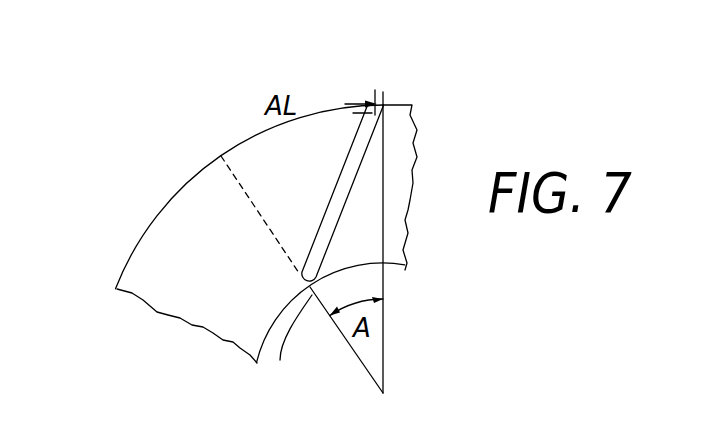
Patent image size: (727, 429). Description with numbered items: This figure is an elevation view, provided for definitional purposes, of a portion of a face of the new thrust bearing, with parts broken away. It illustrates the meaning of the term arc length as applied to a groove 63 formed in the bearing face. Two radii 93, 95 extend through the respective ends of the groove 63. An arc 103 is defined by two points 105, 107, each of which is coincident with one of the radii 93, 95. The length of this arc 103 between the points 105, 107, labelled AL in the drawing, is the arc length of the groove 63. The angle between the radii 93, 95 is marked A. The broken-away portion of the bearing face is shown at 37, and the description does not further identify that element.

The plate 37 is at (125, 268).
The groove 63 is at (325, 213).
The radius 93 is at (280, 360).
The radius 95 is at (383, 281).
The arc 103 is at (323, 108).
The point 105 is at (221, 156).
The point 107 is at (383, 108).